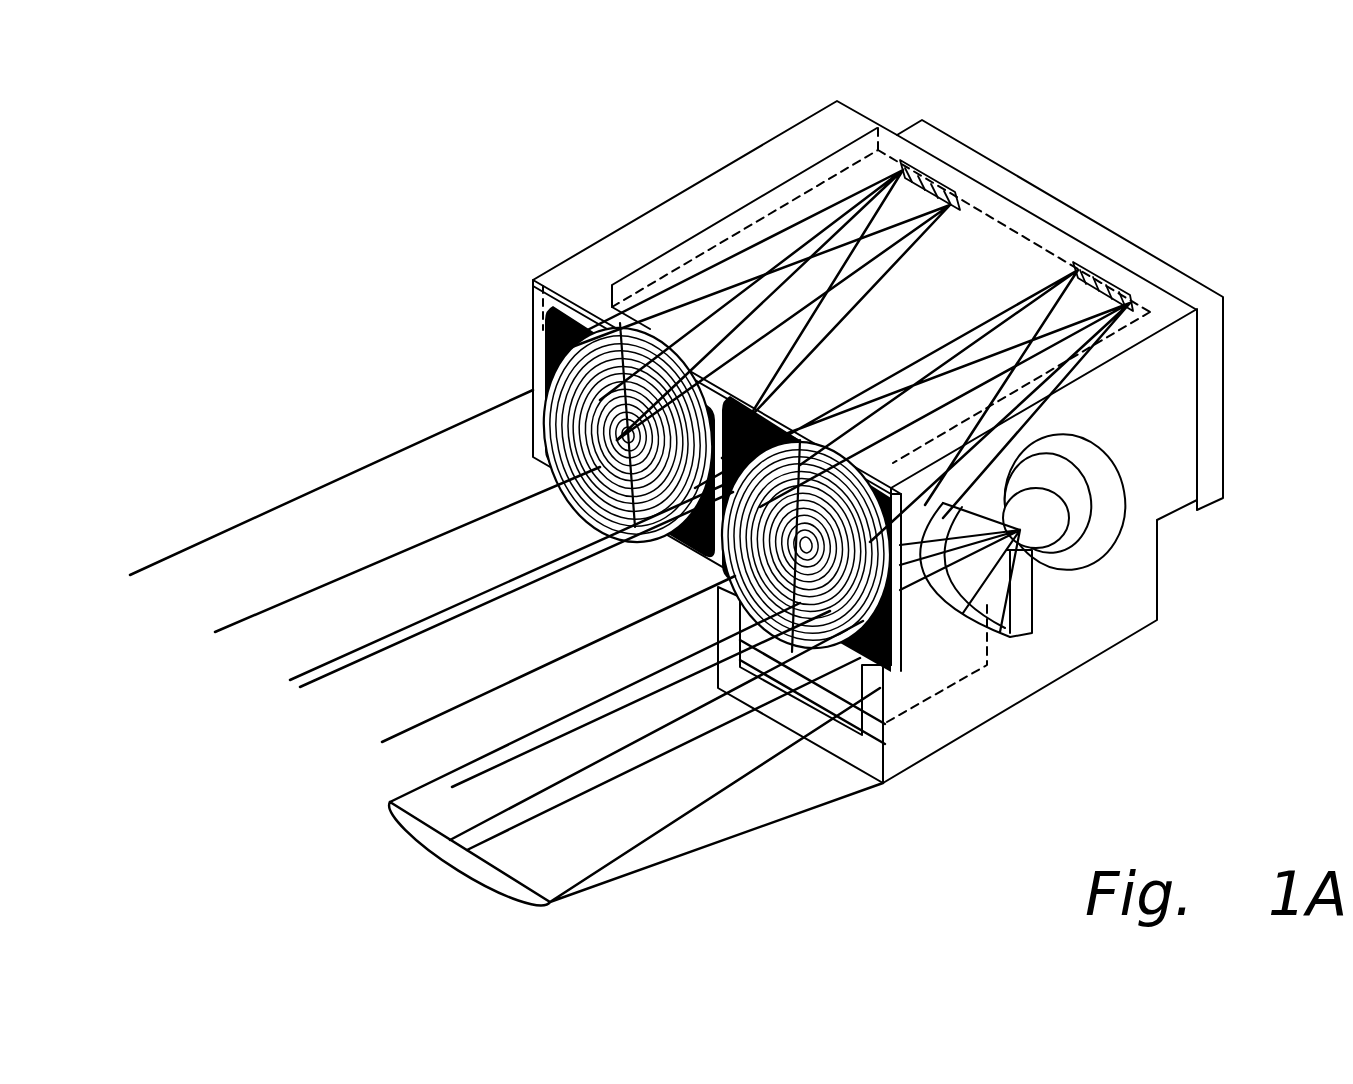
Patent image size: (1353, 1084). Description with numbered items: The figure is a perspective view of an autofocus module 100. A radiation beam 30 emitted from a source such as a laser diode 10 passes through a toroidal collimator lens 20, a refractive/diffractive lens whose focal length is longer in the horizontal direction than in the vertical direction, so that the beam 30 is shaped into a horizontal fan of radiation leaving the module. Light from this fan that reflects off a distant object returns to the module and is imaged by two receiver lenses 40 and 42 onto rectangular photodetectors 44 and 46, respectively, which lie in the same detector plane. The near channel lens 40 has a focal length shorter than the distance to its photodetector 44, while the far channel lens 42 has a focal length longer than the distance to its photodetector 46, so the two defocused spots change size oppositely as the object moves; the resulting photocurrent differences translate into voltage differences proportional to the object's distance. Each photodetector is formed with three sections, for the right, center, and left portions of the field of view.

The autofocus module 100 is at (873, 104).
The laser diode 10 is at (1140, 520).
The toroidal collimator lens 20 is at (1033, 627).
The radiation beam 30 is at (690, 810).
The near channel receiver lens 40 is at (542, 462).
The far channel receiver lens 42 is at (720, 568).
The near channel photodetector 44 is at (930, 178).
The far channel photodetector 46 is at (1100, 273).